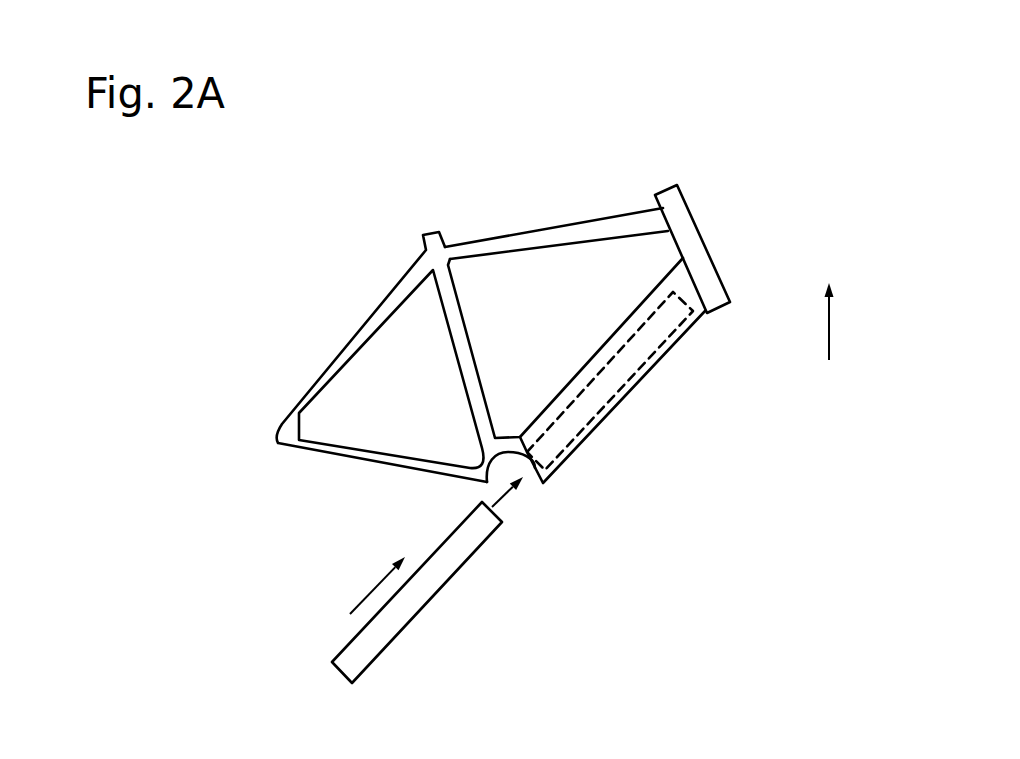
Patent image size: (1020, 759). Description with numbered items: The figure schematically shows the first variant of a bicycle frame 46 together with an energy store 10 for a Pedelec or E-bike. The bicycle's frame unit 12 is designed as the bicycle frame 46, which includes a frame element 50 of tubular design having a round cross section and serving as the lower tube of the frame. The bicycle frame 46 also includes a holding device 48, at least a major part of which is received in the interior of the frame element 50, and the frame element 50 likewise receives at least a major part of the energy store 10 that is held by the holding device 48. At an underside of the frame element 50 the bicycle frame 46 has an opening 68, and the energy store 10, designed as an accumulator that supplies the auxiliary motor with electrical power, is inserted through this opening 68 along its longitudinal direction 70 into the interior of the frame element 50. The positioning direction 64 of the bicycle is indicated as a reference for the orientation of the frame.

The energy store 10 is at (428, 587).
The frame unit 12 is at (529, 367).
The bicycle frame 46 is at (510, 242).
The holding device 48 is at (585, 405).
The frame element 50 is at (685, 287).
The positioning direction 64 is at (829, 330).
The opening 68 is at (533, 483).
The longitudinal direction 70 is at (370, 590).